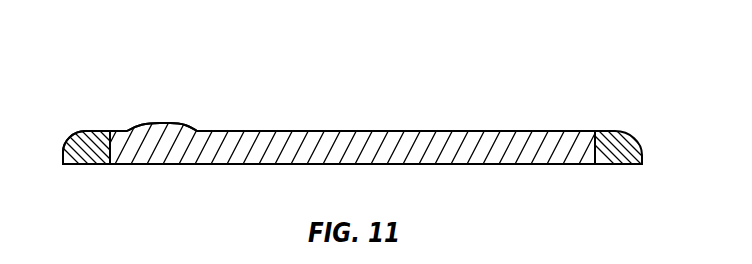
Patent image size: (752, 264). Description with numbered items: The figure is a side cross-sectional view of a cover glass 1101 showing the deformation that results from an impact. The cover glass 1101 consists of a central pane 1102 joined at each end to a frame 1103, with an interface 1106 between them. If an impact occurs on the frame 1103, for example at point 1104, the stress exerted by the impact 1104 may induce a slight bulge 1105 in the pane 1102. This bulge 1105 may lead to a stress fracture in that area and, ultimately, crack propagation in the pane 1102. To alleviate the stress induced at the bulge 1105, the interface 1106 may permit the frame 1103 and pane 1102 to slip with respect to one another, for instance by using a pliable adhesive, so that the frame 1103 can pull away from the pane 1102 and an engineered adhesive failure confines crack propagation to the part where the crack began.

The cover glass 1101 is at (278, 103).
The pane 1102 is at (470, 147).
The frame 1103 is at (92, 157).
The impact point 1104 is at (79, 137).
The bulge 1105 is at (158, 122).
The interface 1106 is at (111, 151).